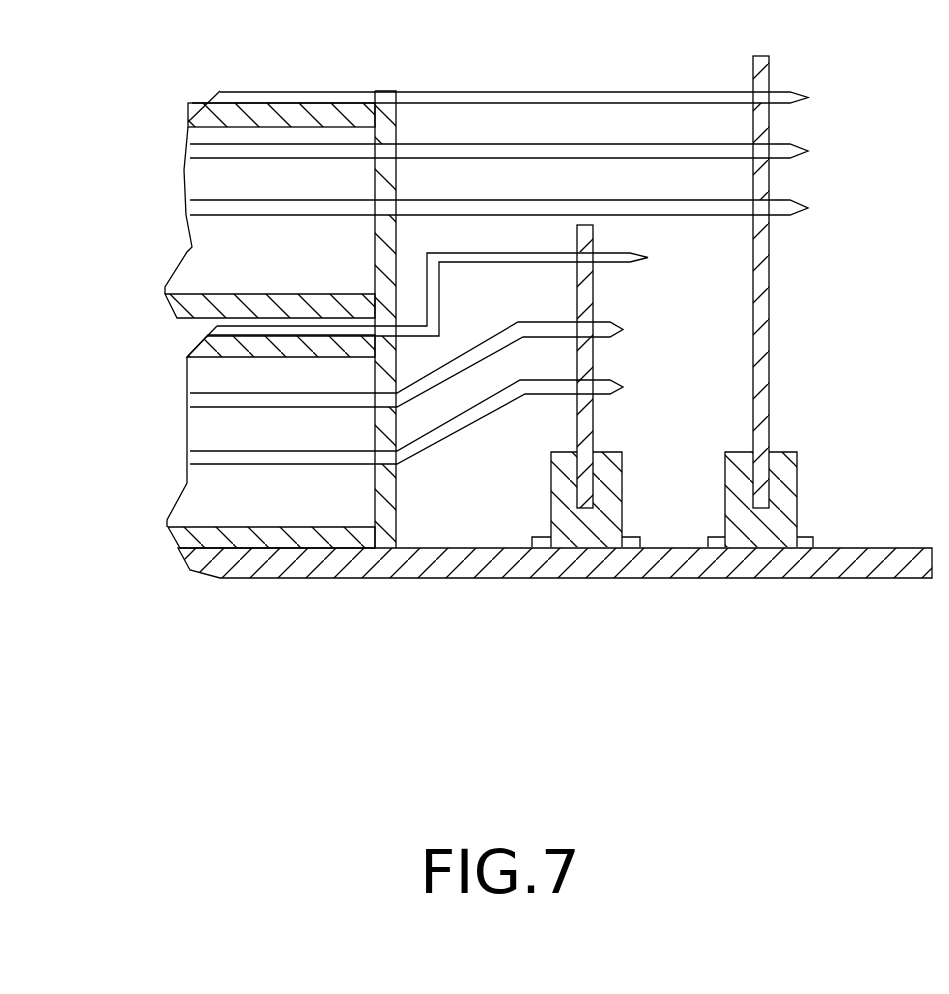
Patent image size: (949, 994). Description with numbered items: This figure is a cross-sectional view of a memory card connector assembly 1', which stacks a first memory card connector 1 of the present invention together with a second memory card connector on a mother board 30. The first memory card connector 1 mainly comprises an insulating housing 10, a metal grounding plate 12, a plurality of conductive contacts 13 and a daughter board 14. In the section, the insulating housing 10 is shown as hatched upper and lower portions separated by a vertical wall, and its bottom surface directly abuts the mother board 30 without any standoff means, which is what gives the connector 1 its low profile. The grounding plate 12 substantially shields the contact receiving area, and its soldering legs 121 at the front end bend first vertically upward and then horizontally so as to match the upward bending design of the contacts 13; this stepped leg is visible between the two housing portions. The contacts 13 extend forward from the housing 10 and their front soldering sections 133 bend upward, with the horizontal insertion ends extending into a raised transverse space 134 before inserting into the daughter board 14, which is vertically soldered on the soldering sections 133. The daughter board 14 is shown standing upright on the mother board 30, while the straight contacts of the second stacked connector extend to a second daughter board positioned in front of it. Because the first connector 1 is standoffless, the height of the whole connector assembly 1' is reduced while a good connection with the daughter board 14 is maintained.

The memory card connector 1 is at (439, 352).
The memory card connector assembly 1' is at (482, 363).
The insulating housing 10 is at (216, 342).
The metal grounding plate 12 is at (397, 303).
The soldering legs 121 is at (487, 258).
The conductive contacts 13 is at (428, 492).
The soldering sections 133 is at (467, 363).
The raised transverse space 134 is at (533, 413).
The daughter board 14 is at (593, 296).
The mother board 30 is at (626, 563).